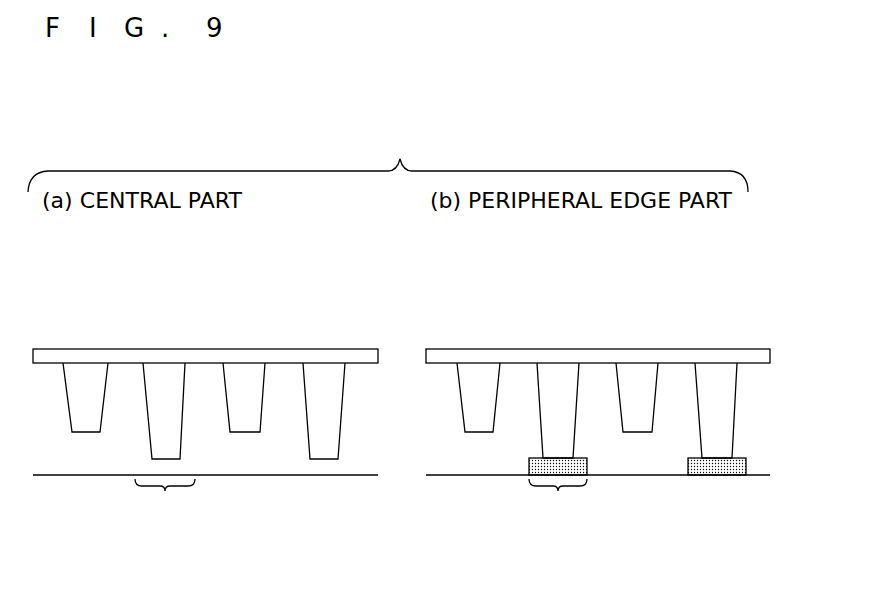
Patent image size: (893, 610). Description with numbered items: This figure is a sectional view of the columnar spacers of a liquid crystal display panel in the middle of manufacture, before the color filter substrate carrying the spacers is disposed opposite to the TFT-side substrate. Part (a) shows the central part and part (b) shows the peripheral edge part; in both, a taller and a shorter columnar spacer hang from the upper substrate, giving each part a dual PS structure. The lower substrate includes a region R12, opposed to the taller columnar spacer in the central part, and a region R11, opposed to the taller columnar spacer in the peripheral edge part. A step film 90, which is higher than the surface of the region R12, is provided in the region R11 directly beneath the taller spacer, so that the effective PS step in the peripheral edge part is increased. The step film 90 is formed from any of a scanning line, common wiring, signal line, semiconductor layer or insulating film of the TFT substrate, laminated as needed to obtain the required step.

The step film 90 is at (588, 465).
The region R11 is at (558, 500).
The region R12 is at (165, 500).